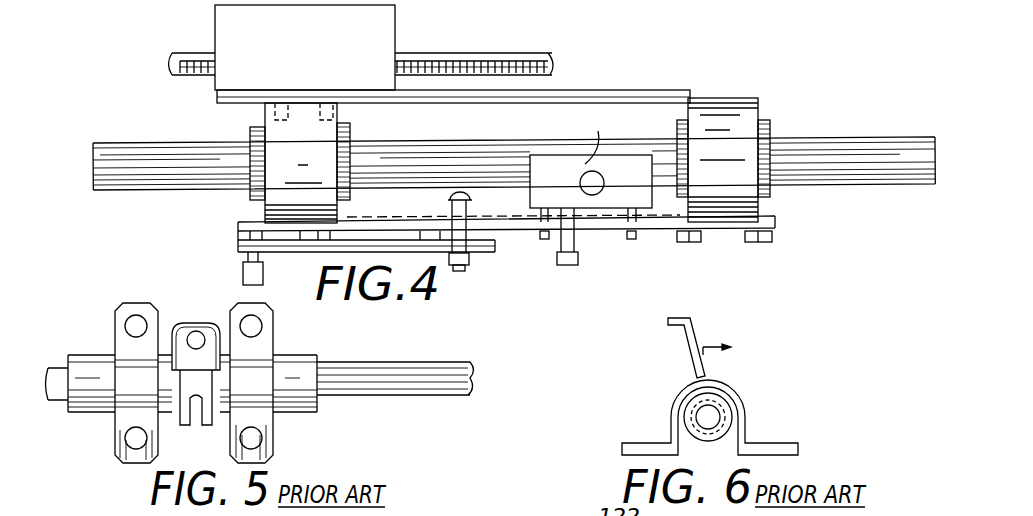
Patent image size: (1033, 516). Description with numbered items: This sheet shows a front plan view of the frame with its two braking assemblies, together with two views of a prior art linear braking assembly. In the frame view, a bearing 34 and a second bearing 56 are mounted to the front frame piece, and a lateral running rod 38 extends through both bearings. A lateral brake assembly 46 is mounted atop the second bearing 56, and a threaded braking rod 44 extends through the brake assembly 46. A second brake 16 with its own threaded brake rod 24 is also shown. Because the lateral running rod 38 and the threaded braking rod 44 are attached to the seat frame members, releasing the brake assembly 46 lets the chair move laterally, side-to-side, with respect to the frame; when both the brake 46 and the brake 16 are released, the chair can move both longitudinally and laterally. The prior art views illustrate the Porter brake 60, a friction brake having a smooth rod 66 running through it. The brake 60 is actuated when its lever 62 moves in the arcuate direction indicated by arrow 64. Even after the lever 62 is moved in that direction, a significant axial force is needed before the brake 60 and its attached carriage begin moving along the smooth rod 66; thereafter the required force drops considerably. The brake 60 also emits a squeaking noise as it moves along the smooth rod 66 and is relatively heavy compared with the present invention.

In FIG. 4, the brake 16 is at (563, 155).
In FIG. 4, the threaded brake rod 24 is at (603, 170).
In FIG. 4, the bearing 34 is at (760, 203).
In FIG. 4, the lateral running rod 38 is at (815, 137).
In FIG. 4, the threaded braking rod 44 is at (468, 53).
In FIG. 4, the lateral brake assembly 46 is at (396, 24).
In FIG. 4, the second bearing 56 is at (253, 212).
In FIG. 5, the Porter brake 60 is at (330, 337).
In FIG. 6, the Porter brake 60 is at (735, 407).
In FIG. 6, the lever 62 is at (697, 330).
In FIG. 6, the arrow 64 is at (718, 361).
In FIG. 5, the smooth rod 66 is at (372, 362).